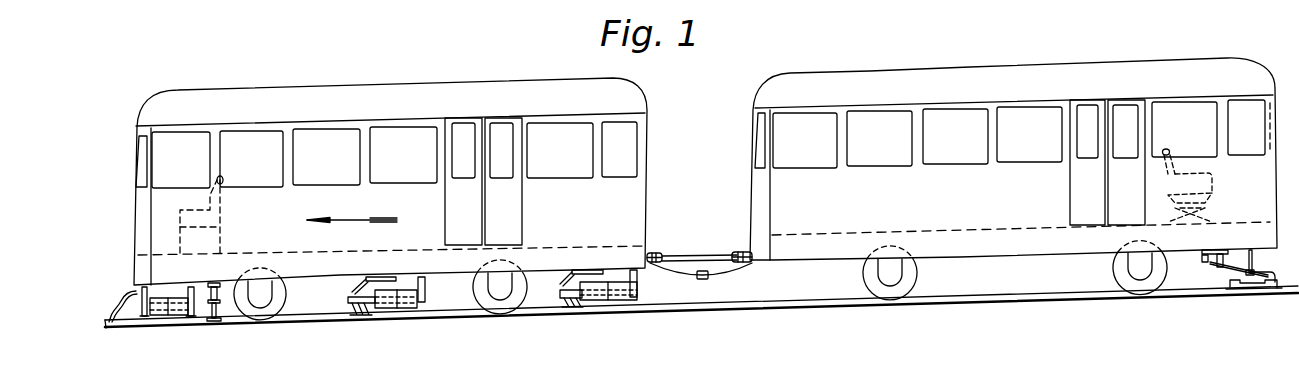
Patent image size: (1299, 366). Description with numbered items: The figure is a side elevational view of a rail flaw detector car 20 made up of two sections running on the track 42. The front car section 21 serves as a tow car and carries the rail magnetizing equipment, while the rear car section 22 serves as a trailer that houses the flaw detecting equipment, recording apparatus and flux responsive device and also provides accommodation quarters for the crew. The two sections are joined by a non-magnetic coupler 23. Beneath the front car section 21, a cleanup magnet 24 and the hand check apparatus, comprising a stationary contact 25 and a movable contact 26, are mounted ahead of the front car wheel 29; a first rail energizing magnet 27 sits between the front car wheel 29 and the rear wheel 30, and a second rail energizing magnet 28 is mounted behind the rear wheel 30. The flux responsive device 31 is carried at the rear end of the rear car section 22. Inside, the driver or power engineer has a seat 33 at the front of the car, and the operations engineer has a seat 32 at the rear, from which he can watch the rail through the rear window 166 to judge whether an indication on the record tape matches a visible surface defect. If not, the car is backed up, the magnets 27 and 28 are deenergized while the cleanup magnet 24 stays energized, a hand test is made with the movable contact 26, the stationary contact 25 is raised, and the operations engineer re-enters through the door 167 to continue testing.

The detector car 20 is at (762, 66).
The front car section 21 is at (458, 90).
The rear car section 22 is at (972, 77).
The non-magnetic coupler 23 is at (700, 256).
The cleanup magnet 24 is at (163, 314).
The stationary contact 25 is at (214, 322).
The movable contact 26 is at (120, 295).
The rail energizing magnet 27 is at (407, 306).
The rail energizing magnet 28 is at (617, 298).
The front car wheel 29 is at (281, 299).
The rear wheel 30 is at (486, 297).
The flux responsive device 31 is at (1263, 265).
The seat 32 is at (1212, 184).
The seat 33 is at (213, 218).
The track 42 is at (701, 326).
The rear window 166 is at (1270, 120).
The door 167 is at (1080, 183).